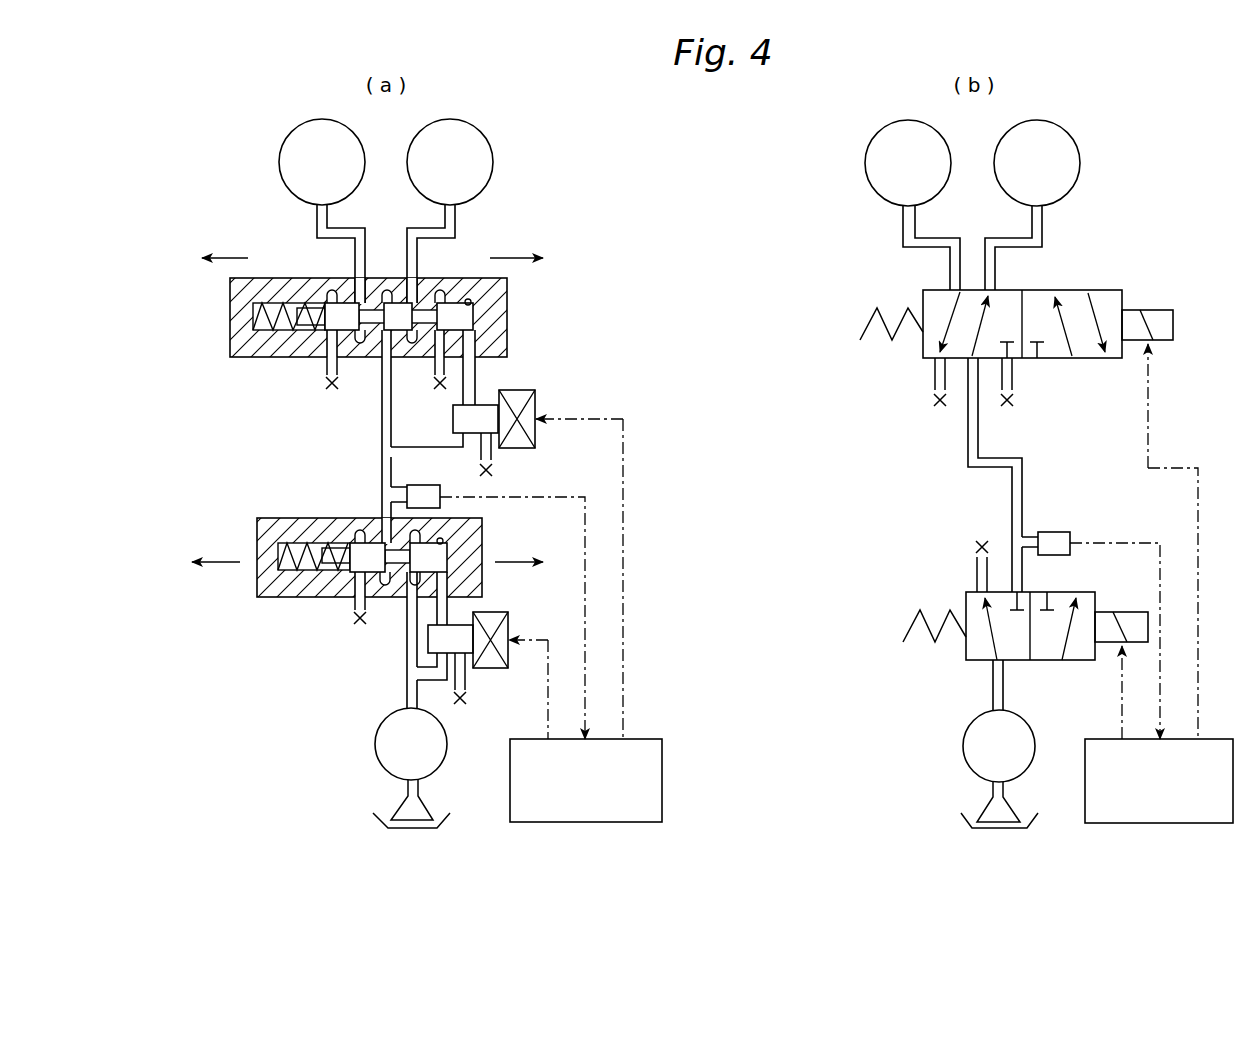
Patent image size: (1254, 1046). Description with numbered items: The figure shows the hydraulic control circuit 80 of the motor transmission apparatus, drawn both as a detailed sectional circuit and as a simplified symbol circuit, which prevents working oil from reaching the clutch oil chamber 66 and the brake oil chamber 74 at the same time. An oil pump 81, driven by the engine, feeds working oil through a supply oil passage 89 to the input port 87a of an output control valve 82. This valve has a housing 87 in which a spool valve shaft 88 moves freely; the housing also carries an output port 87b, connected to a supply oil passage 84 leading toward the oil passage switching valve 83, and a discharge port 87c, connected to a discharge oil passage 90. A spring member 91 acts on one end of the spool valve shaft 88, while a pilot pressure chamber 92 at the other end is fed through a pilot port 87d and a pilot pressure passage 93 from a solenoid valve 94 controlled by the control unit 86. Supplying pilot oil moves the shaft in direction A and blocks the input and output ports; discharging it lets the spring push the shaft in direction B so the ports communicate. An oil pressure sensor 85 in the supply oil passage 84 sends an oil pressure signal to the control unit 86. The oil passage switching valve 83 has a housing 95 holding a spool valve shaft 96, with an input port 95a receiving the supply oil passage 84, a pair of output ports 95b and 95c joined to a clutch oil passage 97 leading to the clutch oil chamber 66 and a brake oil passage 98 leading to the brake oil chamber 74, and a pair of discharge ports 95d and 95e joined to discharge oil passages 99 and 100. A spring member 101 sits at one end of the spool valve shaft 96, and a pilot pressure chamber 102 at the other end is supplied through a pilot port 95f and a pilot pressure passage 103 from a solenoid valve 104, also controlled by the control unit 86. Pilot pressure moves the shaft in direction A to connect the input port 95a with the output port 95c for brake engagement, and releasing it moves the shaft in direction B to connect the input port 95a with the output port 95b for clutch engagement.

The clutch oil chamber 66 is at (601, 162).
The brake oil chamber 74 is at (760, 162).
The hydraulic control circuit 80 is at (574, 231).
The oil pump 81 is at (376, 748).
The output control valve 82 is at (257, 519).
The oil passage switching valve 83 is at (510, 300).
The supply oil passage 84 is at (382, 468).
The oil pressure sensor 85 is at (418, 490).
The control unit 86 is at (650, 739).
The housing 87 is at (273, 600).
The input port 87a is at (410, 600).
The output port 87b is at (380, 520).
The discharge port 87c is at (346, 598).
The pilot port 87d is at (444, 590).
The spool valve shaft 88 is at (432, 560).
The supply oil passage 89 is at (405, 683).
The discharge oil passage 90 is at (360, 618).
The spring member 91 is at (270, 564).
The pilot pressure chamber 92 is at (443, 538).
The pilot pressure passage 93 is at (490, 628).
The solenoid valve 94 is at (488, 688).
The housing 95 is at (240, 290).
The input port 95a is at (386, 362).
The output port 95b is at (362, 285).
The output port 95c is at (413, 288).
The discharge port 95d is at (333, 360).
The discharge port 95e is at (437, 362).
The pilot port 95f is at (475, 360).
The spool valve shaft 96 is at (458, 318).
The clutch oil passage 97 is at (317, 237).
The brake oil passage 98 is at (455, 237).
The discharge oil passage 99 is at (328, 376).
The discharge oil passage 100 is at (430, 378).
The spring member 101 is at (265, 322).
The pilot pressure chamber 102 is at (470, 301).
The pilot pressure passage 103 is at (476, 381).
The solenoid valve 104 is at (534, 440).